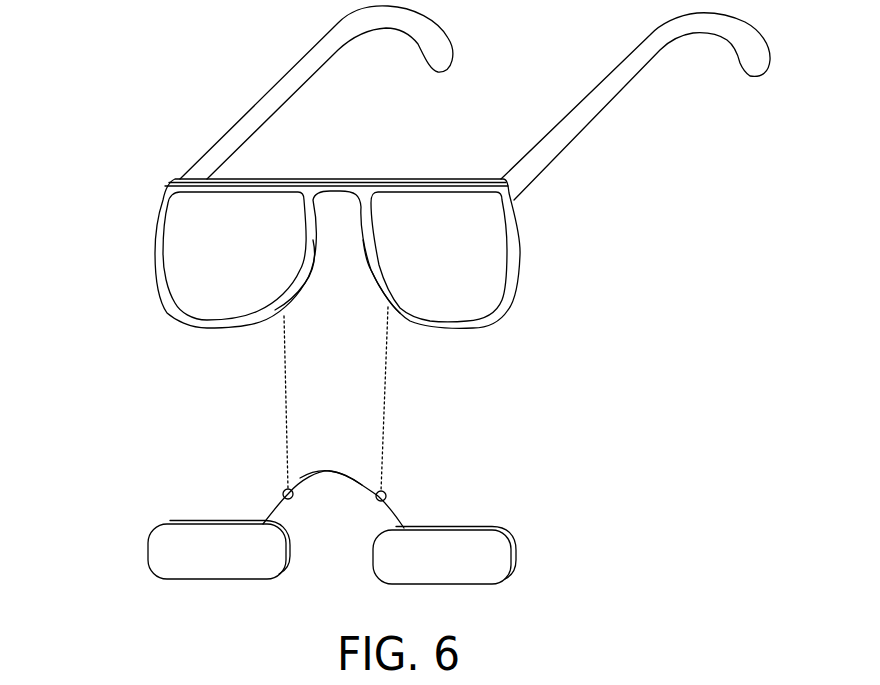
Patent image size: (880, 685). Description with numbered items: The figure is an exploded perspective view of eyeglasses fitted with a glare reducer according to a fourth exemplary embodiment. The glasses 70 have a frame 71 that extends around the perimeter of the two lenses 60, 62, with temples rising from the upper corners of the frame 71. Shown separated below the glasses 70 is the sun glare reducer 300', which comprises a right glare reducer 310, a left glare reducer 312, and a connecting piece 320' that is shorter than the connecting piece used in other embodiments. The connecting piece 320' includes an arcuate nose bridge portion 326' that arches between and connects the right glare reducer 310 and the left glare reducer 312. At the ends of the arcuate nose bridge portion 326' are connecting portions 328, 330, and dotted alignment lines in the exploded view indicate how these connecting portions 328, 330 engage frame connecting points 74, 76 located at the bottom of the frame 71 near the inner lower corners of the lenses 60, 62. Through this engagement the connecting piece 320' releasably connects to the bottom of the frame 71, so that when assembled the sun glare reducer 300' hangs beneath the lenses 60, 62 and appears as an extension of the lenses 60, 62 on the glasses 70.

The lens 60 is at (176, 267).
The lens 62 is at (500, 270).
The glasses 70 is at (285, 77).
The frame 71 is at (343, 180).
The frame connecting point 74 is at (283, 302).
The frame connecting point 76 is at (390, 300).
The sun glare reducer 300' is at (313, 535).
The right glare reducer 310 is at (167, 580).
The left glare reducer 312 is at (493, 587).
The connecting piece 320' is at (381, 499).
The arcuate nose bridge portion 326' is at (331, 547).
The connecting portion 328 is at (287, 489).
The connecting portion 330 is at (385, 491).